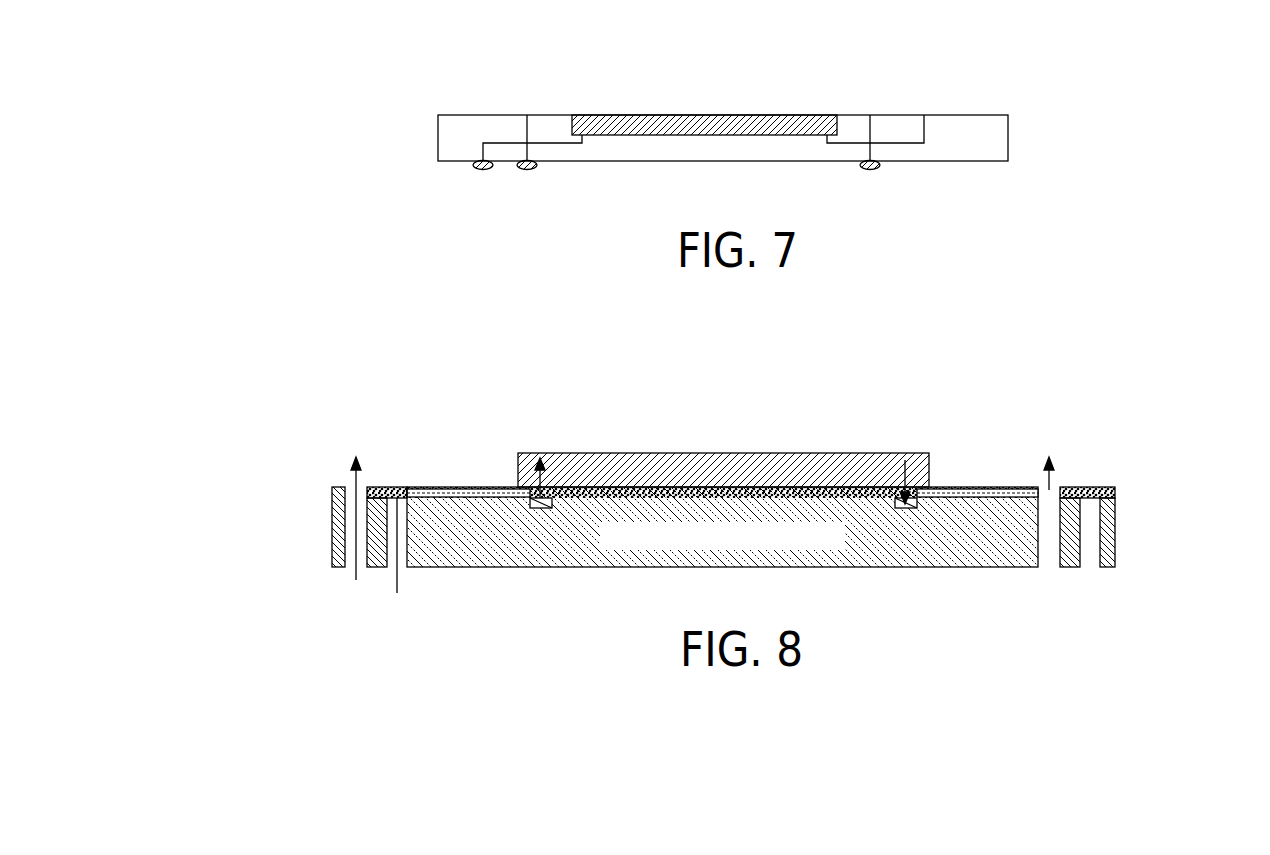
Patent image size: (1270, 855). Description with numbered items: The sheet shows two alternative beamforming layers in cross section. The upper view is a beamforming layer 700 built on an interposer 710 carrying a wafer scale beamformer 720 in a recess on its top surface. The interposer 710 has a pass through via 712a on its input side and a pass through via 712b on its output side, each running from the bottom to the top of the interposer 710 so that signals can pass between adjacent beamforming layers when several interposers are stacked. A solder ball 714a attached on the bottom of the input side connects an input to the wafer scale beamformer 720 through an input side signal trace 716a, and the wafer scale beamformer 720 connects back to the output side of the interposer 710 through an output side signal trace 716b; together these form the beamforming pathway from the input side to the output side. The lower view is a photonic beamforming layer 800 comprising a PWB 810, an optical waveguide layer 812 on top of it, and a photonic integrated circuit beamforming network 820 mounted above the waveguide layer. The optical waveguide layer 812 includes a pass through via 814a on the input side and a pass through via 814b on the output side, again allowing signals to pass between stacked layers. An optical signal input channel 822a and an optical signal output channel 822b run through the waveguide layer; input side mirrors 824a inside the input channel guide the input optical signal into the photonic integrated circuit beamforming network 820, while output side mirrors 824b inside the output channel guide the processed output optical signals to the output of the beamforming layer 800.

In FIG. 7, the beamforming layer 700 is at (360, 113).
In FIG. 7, the interposer 710 is at (1008, 135).
In FIG. 7, the pass through via 712a is at (527, 115).
In FIG. 7, the pass through via 712b is at (870, 115).
In FIG. 7, the solder ball 714a is at (483, 170).
In FIG. 7, the input side signal trace 716a is at (563, 143).
In FIG. 7, the output side signal trace 716b is at (924, 115).
In FIG. 7, the wafer scale beamformer 720 is at (680, 115).
In FIG. 8, the beamforming layer 800 is at (243, 345).
In FIG. 8, the PWB 810 is at (722, 579).
In FIG. 8, the optical waveguide layer 812 is at (915, 568).
In FIG. 8, the pass through via 814a is at (332, 512).
In FIG. 8, the pass through via 814b is at (1090, 515).
In FIG. 8, the photonic integrated circuit beamforming network 820 is at (890, 453).
In FIG. 8, the optical signal input channel 822a is at (450, 497).
In FIG. 8, the optical signal output channel 822b is at (1045, 552).
In FIG. 8, the input side mirror 824a is at (403, 492).
In FIG. 8, the output side mirror 824b is at (923, 485).